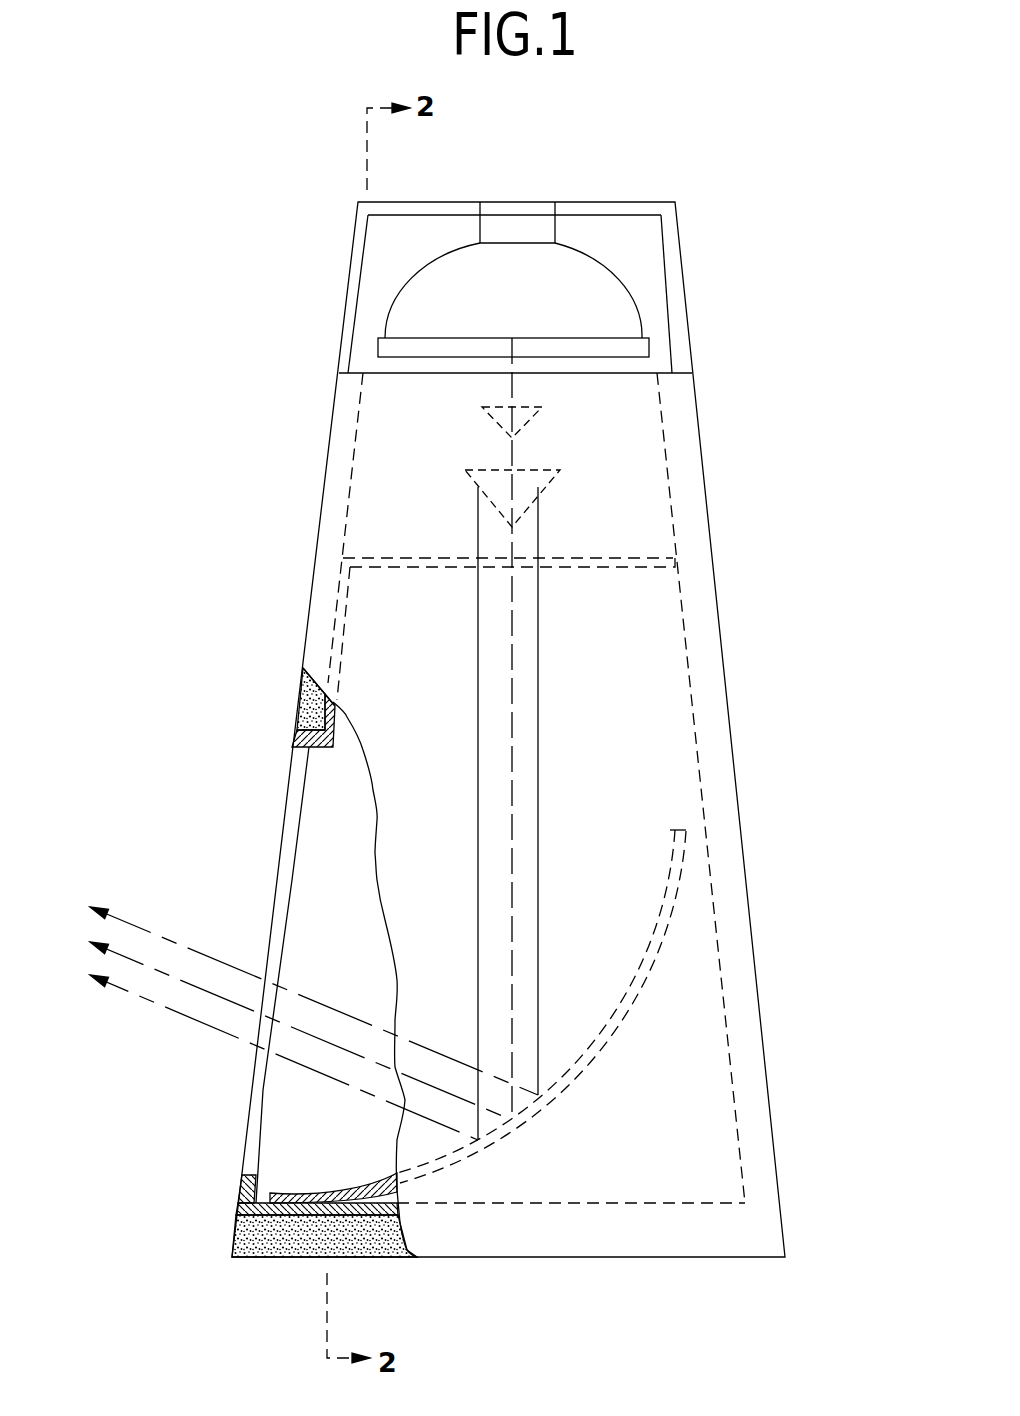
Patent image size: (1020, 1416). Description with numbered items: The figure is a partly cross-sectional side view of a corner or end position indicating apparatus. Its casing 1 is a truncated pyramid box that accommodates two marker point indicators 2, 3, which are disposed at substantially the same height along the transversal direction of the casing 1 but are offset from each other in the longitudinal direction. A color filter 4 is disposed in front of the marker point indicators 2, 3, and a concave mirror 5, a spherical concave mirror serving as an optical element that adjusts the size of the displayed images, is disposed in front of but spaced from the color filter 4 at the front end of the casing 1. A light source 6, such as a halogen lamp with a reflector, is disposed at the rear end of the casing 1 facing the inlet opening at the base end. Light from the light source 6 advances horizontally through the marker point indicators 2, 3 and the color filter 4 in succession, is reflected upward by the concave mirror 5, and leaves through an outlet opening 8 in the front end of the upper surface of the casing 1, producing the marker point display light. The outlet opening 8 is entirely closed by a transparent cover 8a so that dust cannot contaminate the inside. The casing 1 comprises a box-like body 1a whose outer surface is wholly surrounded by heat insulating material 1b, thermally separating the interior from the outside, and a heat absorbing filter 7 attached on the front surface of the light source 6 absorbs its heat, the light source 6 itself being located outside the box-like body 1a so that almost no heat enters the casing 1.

The casing 1 is at (318, 538).
The box-like body 1a is at (240, 1190).
The heat insulating material 1b is at (303, 698).
The marker point indicator 2 is at (470, 480).
The marker point indicator 3 is at (478, 418).
The color filter 4 is at (455, 568).
The concave mirror 5 is at (370, 1183).
The light source 6 is at (425, 275).
The heat absorbing filter 7 is at (378, 347).
The outlet opening 8 is at (297, 745).
The transparent cover 8a is at (297, 848).